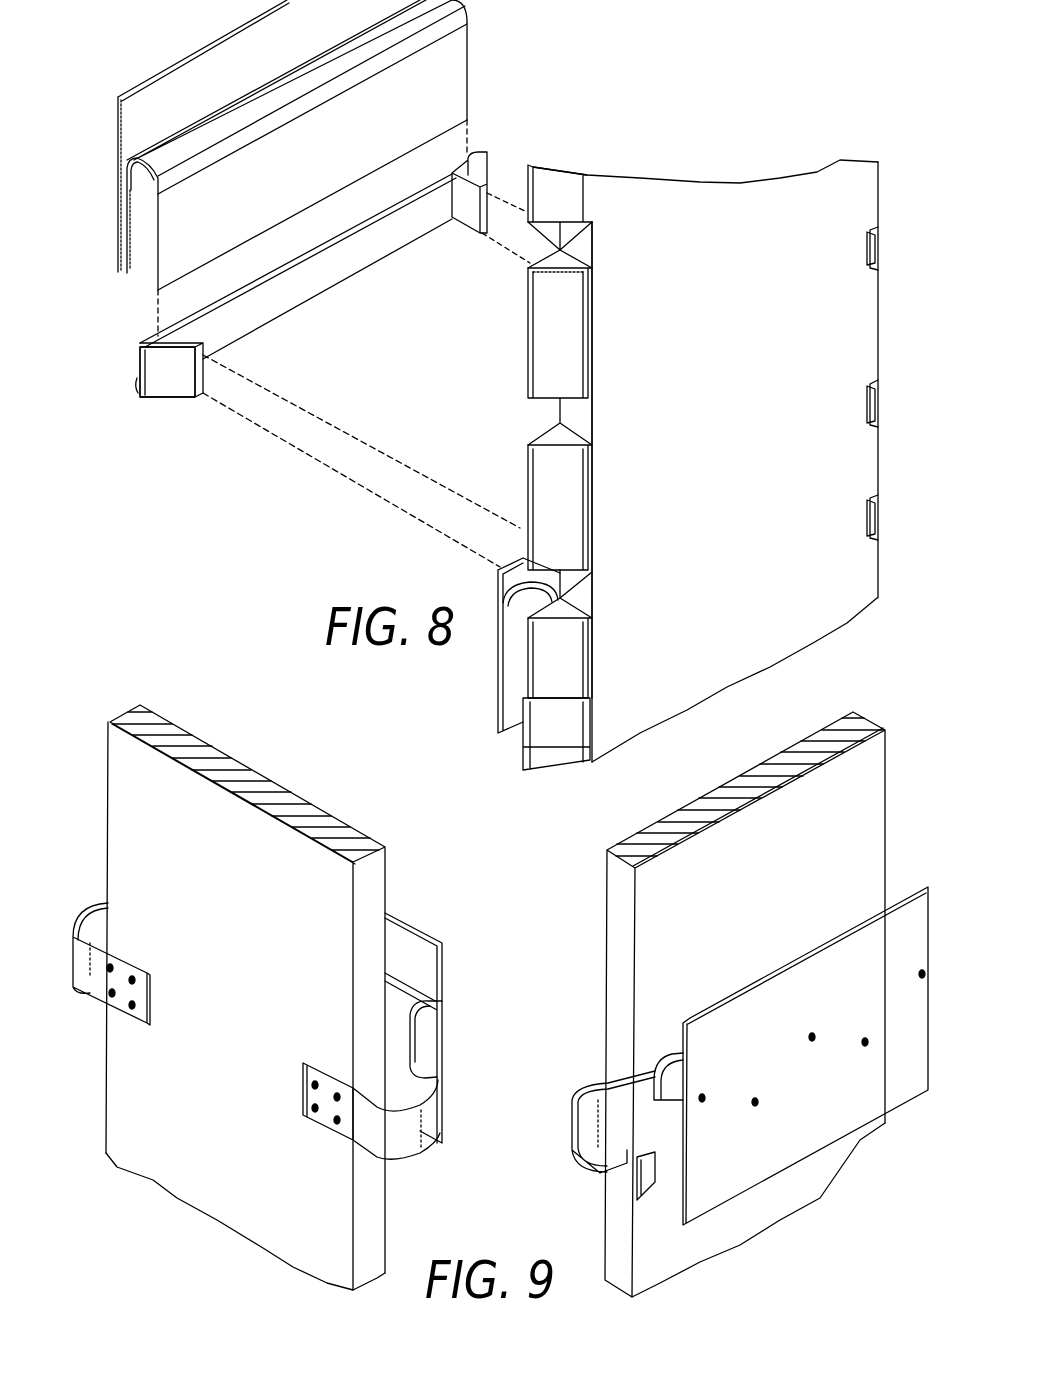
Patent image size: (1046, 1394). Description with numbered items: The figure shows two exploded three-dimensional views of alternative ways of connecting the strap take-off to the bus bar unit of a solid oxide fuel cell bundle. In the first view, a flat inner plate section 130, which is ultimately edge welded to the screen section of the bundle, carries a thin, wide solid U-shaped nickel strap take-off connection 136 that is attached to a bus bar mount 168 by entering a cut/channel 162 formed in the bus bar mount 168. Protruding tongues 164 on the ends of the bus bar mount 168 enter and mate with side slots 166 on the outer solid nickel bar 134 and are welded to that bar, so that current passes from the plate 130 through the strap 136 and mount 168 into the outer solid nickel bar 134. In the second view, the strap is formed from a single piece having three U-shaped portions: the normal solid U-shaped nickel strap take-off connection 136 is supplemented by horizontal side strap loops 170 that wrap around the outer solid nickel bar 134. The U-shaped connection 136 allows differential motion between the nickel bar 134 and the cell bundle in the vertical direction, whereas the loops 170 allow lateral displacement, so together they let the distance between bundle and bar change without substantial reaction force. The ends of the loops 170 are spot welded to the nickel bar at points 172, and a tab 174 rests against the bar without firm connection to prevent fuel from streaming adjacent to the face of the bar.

In FIG. 8, the flat inner plate section 130 is at (142, 108).
In FIG. 9, the flat inner plate section 130 is at (443, 952).
In FIG. 8, the outer solid nickel bar 134 is at (863, 366).
In FIG. 9, the outer solid nickel bar 134 is at (298, 865).
In FIG. 8, the solid U-shaped nickel strap take-off connection 136 is at (451, 81).
In FIG. 9, the solid U-shaped nickel strap take-off connection 136 is at (423, 1032).
In FIG. 8, the cut/channel 162 is at (137, 367).
In FIG. 8, the protruding tongue 164 is at (167, 380).
In FIG. 8, the side slot 166 is at (580, 241).
In FIG. 8, the bus bar mount 168 is at (317, 280).
In FIG. 9, the horizontal side strap loop 170 is at (92, 987).
In FIG. 9, the spot weld point 172 is at (333, 1123).
In FIG. 9, the tab 174 is at (642, 1188).